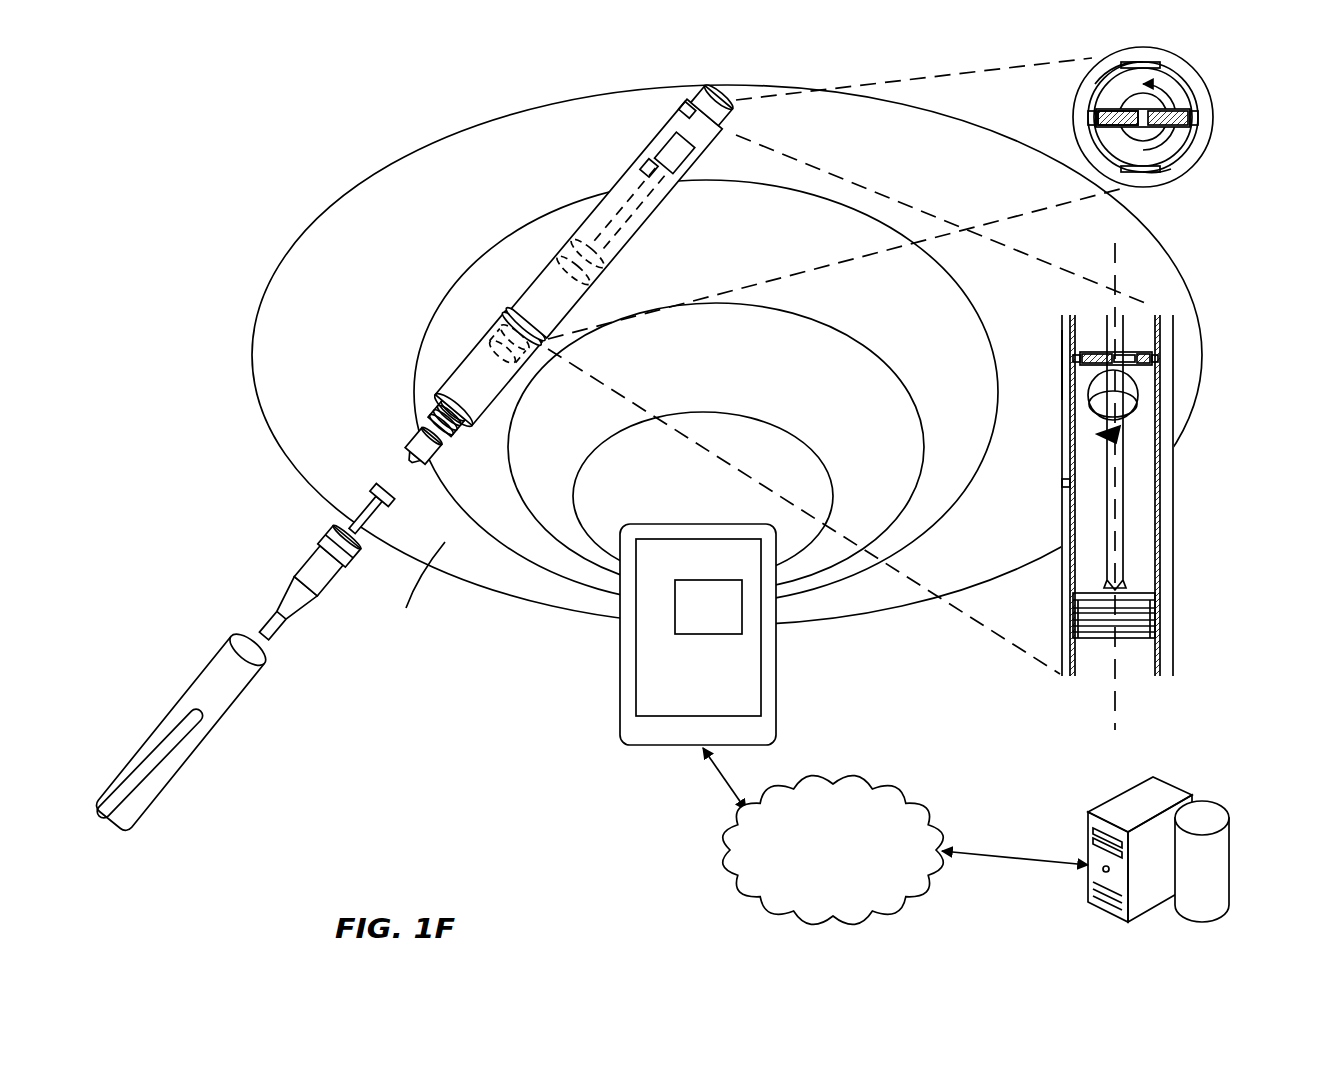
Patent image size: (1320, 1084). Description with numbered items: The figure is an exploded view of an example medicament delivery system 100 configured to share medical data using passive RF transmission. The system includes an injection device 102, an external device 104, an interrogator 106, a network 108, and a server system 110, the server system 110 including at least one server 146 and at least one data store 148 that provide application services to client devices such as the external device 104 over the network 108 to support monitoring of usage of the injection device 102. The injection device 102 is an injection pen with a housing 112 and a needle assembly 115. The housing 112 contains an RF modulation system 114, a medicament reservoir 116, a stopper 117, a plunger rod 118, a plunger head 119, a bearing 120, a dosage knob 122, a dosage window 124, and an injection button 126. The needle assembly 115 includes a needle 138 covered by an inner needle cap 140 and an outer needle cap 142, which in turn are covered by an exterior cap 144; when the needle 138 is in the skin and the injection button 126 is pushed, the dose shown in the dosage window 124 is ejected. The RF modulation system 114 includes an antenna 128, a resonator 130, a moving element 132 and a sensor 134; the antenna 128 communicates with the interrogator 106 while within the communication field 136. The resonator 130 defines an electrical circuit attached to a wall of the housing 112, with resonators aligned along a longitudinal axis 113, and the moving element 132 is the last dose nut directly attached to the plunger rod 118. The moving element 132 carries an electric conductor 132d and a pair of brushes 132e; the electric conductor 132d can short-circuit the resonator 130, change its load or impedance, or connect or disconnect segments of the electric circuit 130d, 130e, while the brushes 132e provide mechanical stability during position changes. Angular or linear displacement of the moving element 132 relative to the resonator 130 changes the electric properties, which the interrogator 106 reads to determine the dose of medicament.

The medicament delivery system 100 is at (238, 210).
The injection device 102 is at (531, 224).
The external device 104 is at (680, 524).
The interrogator 106 is at (708, 607).
The network 108 is at (903, 794).
The server system 110 is at (1161, 862).
The housing 112 is at (635, 188).
The longitudinal axis 113 is at (1108, 686).
The RF modulation system 114 is at (948, 397).
The needle assembly 115 is at (422, 428).
The medicament reservoir 116 is at (455, 388).
The stopper 117 is at (548, 352).
The plunger rod 118 is at (1120, 458).
The plunger head 119 is at (1112, 633).
The bearing 120 is at (581, 261).
The dosage knob 122 is at (713, 104).
The dosage window 124 is at (675, 152).
The injection button 126 is at (733, 84).
The antenna 128 is at (1062, 358).
The resonator 130 is at (1137, 262).
The segment of the electric circuit 130d is at (1095, 83).
The segment of the electric circuit 130e is at (1171, 169).
The moving element 132 is at (1122, 349).
The electric conductor 132d is at (1168, 125).
The pair of brushes 132e is at (1191, 117).
The sensor 134 is at (1062, 482).
The communication field 136 is at (410, 597).
The needle 138 is at (395, 463).
The inner needle cap 140 is at (360, 483).
The outer needle cap 142 is at (289, 577).
The exterior cap 144 is at (215, 681).
The server 146 is at (1168, 785).
The data store 148 is at (1233, 845).